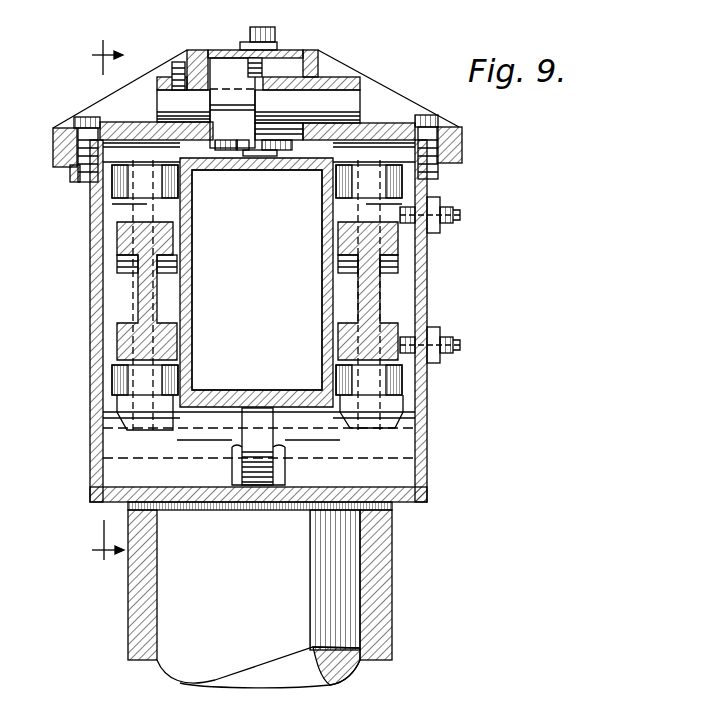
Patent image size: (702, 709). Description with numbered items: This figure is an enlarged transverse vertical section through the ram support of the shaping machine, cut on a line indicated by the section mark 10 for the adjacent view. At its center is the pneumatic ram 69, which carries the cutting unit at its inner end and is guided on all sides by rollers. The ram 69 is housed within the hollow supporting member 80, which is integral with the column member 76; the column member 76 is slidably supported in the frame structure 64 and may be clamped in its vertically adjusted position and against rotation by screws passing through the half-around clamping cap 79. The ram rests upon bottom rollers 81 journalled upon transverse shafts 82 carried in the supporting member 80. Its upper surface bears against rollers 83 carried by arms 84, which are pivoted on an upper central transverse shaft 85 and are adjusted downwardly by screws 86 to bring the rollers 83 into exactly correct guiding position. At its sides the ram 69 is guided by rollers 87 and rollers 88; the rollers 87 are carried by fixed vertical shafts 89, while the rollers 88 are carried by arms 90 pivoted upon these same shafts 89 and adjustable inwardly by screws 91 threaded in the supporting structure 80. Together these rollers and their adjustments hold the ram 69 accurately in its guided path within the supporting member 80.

The section line 10- 10 is at (93, 308).
The frame structure 64 is at (130, 622).
The pneumatic ram 69 is at (322, 317).
The column member 76 is at (345, 605).
The half-around clamping cap 79 is at (393, 560).
The hollow supporting member 80 is at (93, 251).
The bottom rollers 81 is at (260, 478).
The transverse shafts 82 is at (187, 505).
The rollers 83 is at (256, 273).
The arms 84 is at (226, 80).
The upper central transverse shaft 85 is at (350, 98).
The screws 86 is at (262, 26).
The rollers 87 is at (122, 184).
The rollers 88 is at (403, 192).
The fixed vertical shafts 89 is at (138, 293).
The arms 90 is at (150, 305).
The screws 91 is at (462, 216).